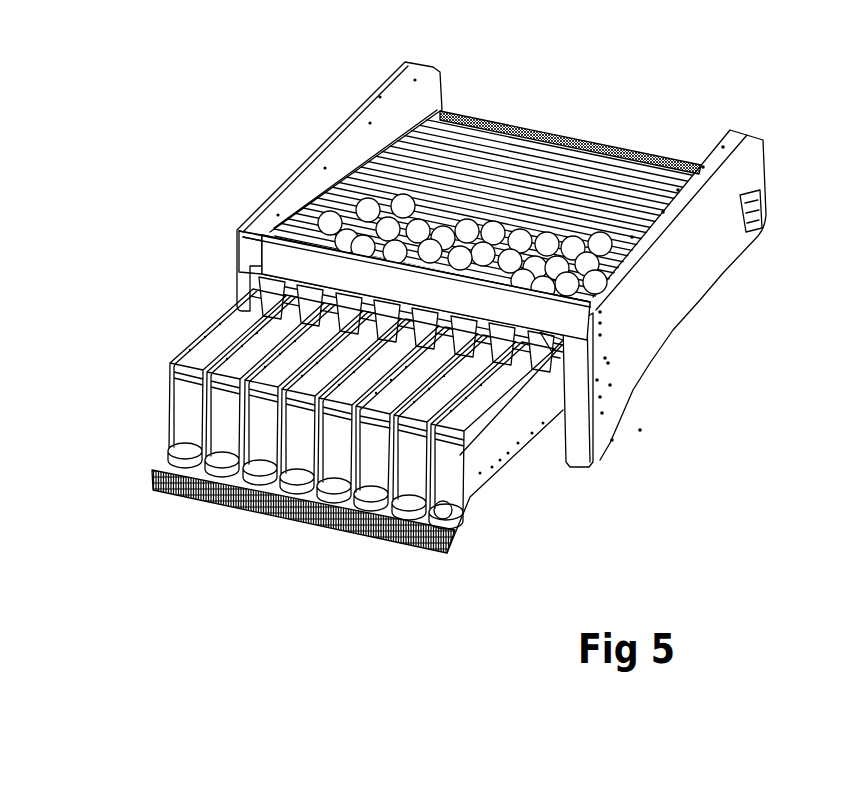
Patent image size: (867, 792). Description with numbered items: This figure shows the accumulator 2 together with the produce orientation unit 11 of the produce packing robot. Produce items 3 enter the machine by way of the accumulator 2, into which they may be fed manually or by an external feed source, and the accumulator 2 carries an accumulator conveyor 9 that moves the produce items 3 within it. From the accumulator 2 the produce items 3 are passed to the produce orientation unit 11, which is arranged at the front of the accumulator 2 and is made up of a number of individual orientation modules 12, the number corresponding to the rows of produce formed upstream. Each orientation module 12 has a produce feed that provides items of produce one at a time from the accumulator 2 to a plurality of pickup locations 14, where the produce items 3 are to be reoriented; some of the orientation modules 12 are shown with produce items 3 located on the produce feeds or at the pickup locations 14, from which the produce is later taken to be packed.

The accumulator 2 is at (730, 360).
The produce items 3 is at (403, 203).
The accumulator conveyor 9 is at (563, 170).
The produce orientation unit 11 is at (548, 492).
The orientation module 12 is at (177, 362).
The pickup locations 14 is at (340, 530).